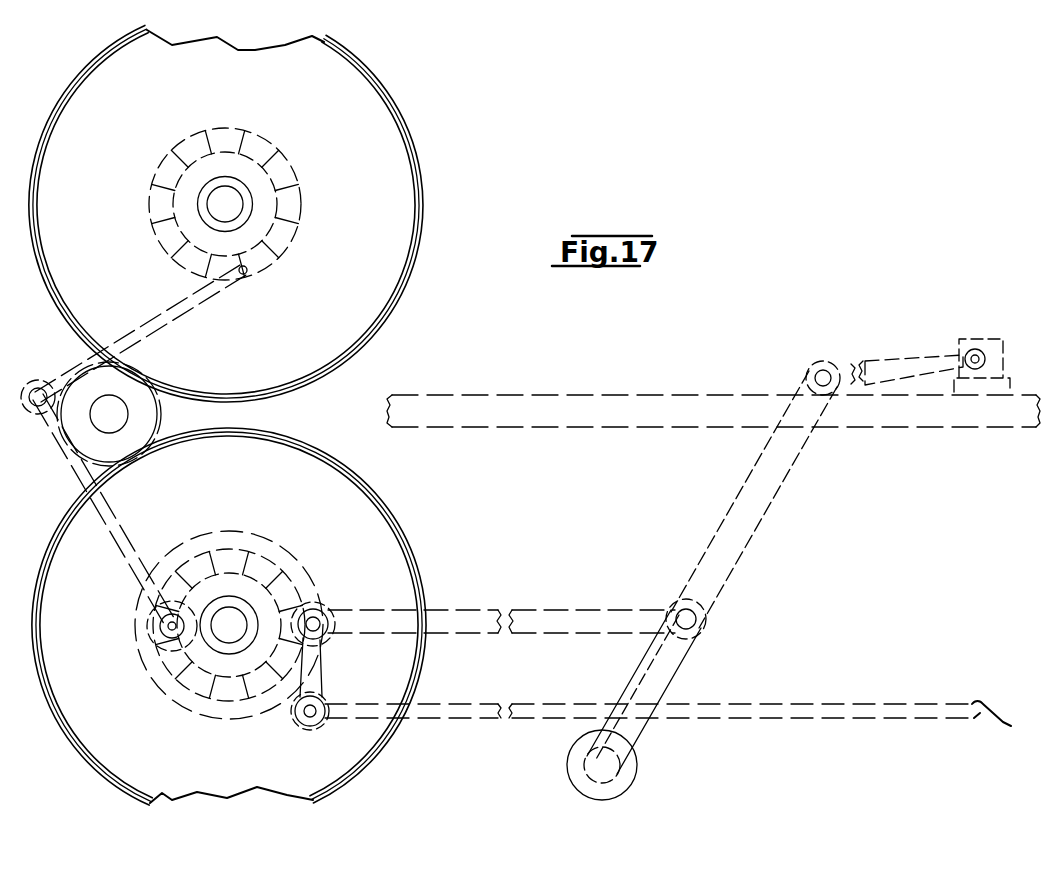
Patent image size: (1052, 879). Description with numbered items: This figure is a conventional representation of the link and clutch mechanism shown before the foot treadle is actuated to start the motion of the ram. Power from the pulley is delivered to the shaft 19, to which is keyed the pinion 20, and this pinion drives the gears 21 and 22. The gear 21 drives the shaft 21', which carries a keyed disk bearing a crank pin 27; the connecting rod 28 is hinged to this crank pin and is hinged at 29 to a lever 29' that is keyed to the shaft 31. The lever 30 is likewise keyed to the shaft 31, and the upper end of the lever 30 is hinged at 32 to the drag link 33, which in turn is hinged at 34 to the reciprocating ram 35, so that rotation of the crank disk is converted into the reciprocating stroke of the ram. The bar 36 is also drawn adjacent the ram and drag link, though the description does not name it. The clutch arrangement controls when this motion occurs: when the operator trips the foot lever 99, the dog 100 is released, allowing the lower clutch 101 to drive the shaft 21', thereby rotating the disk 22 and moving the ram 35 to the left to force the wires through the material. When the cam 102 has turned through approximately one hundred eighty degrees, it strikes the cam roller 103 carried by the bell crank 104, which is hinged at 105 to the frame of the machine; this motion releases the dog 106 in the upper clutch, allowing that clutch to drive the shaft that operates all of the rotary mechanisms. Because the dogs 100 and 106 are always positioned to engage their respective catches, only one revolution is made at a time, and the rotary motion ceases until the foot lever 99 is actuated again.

The shaft 19 is at (109, 420).
The pinion 20 is at (146, 403).
The gear 21 is at (229, 616).
The shaft 21' is at (249, 569).
The gear 22 is at (378, 116).
The crank pin 27 is at (318, 618).
The connecting rod 28 is at (470, 610).
The hinge 29 is at (718, 608).
The lever 29' is at (610, 688).
The lever 30 is at (770, 498).
The shaft 31 is at (614, 770).
The hinge 32 is at (825, 370).
The drag link 33 is at (887, 370).
The hinge 34 is at (977, 356).
The reciprocating ram 35 is at (993, 362).
The bar 36 is at (568, 408).
The foot lever 99 is at (932, 717).
The dog 100 is at (316, 690).
The lower clutch 101 is at (157, 694).
The cam 102 is at (270, 645).
The cam roller 103 is at (160, 636).
The bell crank 104 is at (60, 455).
The hinge 105 is at (38, 388).
The dog 106 is at (244, 271).